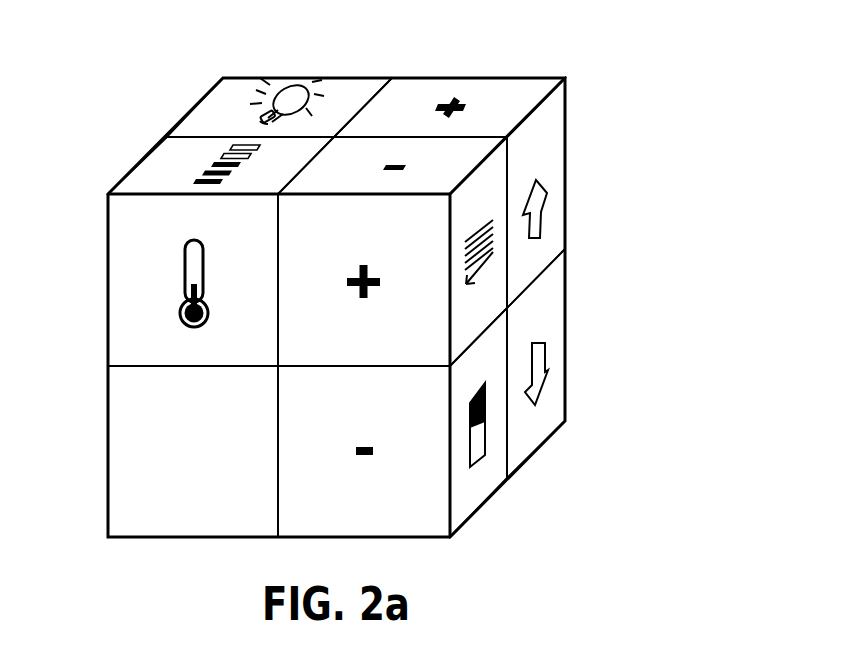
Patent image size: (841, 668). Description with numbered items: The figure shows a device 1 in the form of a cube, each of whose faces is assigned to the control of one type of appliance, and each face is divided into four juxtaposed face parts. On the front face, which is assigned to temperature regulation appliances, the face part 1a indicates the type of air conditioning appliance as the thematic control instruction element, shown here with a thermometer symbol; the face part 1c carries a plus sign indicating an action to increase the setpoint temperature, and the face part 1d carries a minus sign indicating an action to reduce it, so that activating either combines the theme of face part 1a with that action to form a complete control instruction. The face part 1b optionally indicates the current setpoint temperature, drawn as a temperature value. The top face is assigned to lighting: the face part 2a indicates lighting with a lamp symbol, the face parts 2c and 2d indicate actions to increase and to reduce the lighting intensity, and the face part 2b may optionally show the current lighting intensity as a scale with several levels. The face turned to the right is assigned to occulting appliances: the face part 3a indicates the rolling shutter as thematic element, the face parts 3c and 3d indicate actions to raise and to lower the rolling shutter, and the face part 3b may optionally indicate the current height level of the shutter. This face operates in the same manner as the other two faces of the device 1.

The device 1 is at (648, 176).
The face part 1a is at (123, 277).
The face part 1b is at (123, 460).
The face part 1c is at (432, 240).
The face part 1d is at (433, 405).
The face part 2a is at (213, 112).
The face part 2b is at (152, 173).
The face part 2c is at (502, 97).
The face part 2d is at (467, 170).
The face part 3a is at (503, 205).
The face part 3b is at (477, 488).
The face part 3c is at (550, 150).
The face part 3d is at (550, 320).